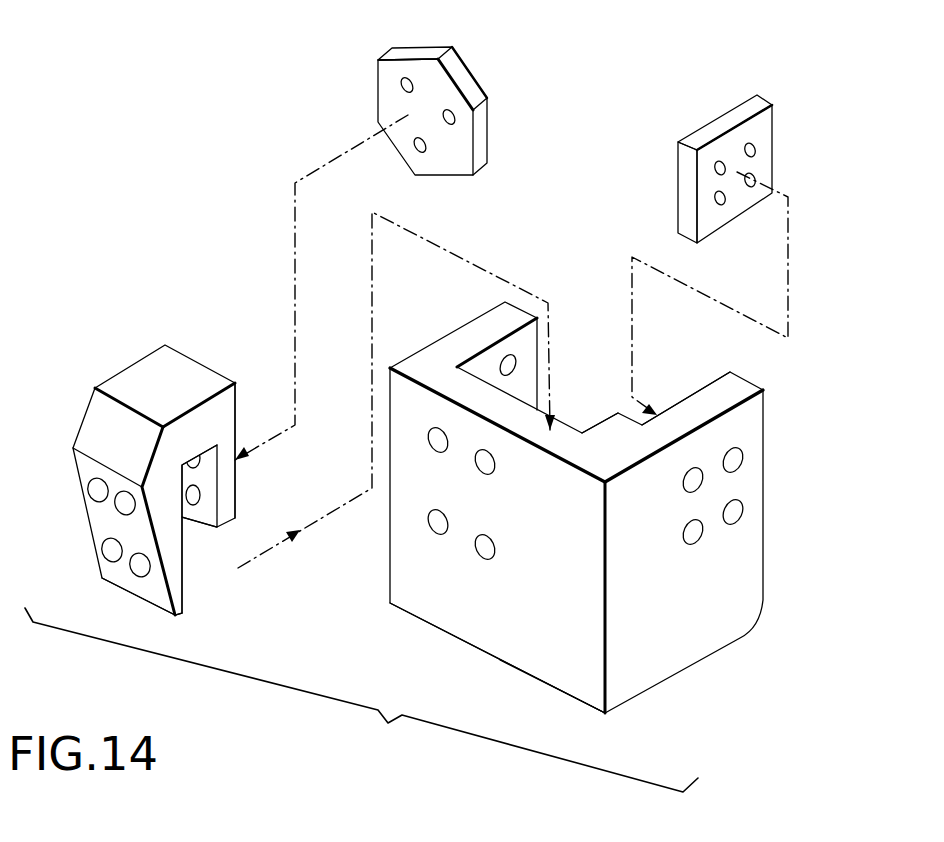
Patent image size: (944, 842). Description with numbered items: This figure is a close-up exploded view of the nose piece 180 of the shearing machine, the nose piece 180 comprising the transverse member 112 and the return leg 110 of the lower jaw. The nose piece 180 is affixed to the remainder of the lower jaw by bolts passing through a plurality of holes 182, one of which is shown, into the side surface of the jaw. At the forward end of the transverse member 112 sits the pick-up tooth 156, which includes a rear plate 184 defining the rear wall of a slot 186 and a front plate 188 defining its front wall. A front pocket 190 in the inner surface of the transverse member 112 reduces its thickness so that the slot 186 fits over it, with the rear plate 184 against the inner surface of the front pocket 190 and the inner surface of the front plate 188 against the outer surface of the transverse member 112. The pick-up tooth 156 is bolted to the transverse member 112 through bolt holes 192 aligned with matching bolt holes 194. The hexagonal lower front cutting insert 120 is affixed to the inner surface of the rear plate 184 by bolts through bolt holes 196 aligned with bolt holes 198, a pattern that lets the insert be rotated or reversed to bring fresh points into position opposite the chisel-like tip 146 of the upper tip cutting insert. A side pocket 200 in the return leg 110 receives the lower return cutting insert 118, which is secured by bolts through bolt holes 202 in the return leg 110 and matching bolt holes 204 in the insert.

The return leg 110 is at (717, 648).
The transverse member 112 is at (485, 640).
The lower return cutting insert 118 is at (770, 123).
The lower front cutting insert 120 is at (472, 74).
The sharpened chisel-like tip 146 is at (452, 47).
The pick-up tooth 156 is at (160, 355).
The nose piece 180 is at (560, 682).
The holes 182 is at (502, 365).
The rear plate 184 is at (220, 525).
The slot 186 is at (230, 568).
The front plate 188 is at (177, 597).
The front pocket 190 is at (588, 432).
The bolt holes 192 is at (112, 554).
The bolt holes 194 is at (433, 532).
The bolt holes 196 is at (400, 83).
The bolt holes 198 is at (242, 456).
The side pocket 200 is at (707, 383).
The bolt holes 202 is at (740, 463).
The bolt holes 204 is at (715, 170).